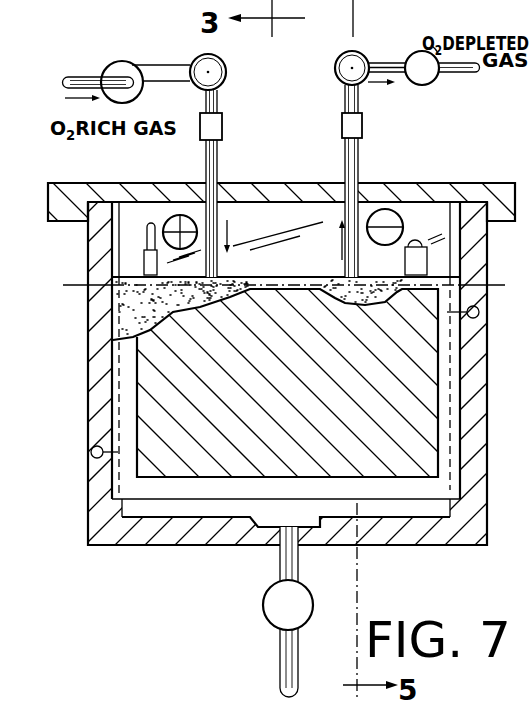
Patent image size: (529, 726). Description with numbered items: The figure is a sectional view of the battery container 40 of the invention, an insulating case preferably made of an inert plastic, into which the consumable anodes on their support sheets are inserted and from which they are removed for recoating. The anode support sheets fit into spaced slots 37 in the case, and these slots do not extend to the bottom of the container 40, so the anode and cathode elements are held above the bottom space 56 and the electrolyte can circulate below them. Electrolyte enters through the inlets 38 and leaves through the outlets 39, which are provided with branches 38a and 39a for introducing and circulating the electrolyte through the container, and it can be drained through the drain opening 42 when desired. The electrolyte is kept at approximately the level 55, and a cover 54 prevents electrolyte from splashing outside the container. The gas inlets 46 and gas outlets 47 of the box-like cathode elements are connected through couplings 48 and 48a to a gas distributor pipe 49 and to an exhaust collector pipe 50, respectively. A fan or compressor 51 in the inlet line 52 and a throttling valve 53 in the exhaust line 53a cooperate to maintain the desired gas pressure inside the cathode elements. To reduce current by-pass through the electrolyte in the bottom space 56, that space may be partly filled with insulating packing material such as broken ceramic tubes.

The slots 37 is at (115, 247).
The inlets 38 is at (91, 452).
The inlet branches 38a is at (115, 442).
The outlets 39 is at (479, 311).
The outlet branches 39a is at (463, 327).
The battery case 40 is at (83, 492).
The drain opening 42 is at (280, 558).
The gas inlets 46 is at (218, 158).
The gas outlets 47 is at (353, 153).
The couplings 48 is at (222, 120).
The couplings 48a is at (356, 122).
The gas distributor pipe 49 is at (233, 62).
The exhaust collector pipe 50 is at (362, 33).
The fan or compressor 51 is at (132, 63).
The inlet line 52 is at (93, 77).
The throttling valve 53 is at (434, 80).
The exhaust line 53a is at (390, 62).
The cover 54 is at (413, 183).
The electrolyte level 55 is at (72, 287).
The bottom space 56 is at (427, 503).